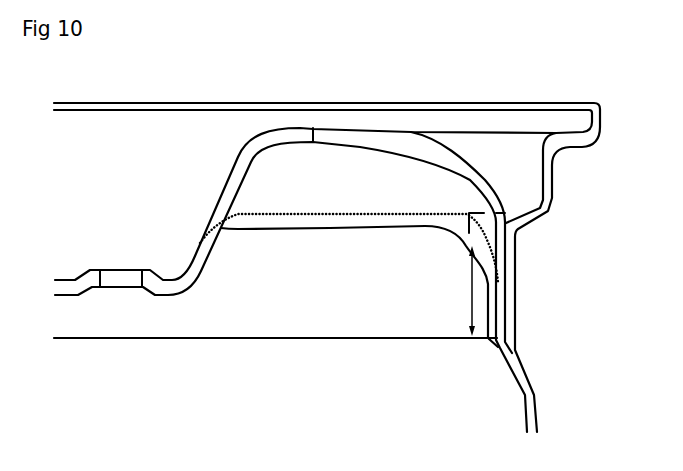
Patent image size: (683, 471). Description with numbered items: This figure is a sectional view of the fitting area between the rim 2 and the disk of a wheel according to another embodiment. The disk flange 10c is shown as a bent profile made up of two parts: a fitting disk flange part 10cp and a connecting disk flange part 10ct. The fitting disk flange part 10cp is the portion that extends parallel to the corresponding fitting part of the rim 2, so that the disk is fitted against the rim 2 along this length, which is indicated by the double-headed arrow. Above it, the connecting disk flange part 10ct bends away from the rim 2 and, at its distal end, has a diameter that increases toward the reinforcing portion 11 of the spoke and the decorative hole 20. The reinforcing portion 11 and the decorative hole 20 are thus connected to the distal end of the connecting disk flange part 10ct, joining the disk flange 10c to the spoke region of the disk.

The decorative hole 20 is at (360, 127).
The rim 2 is at (513, 300).
The reinforcing portion 11 is at (331, 198).
The disk flange 10c is at (373, 249).
The connecting disk flange part 10ct is at (463, 228).
The fitting disk flange part 10cp is at (468, 279).